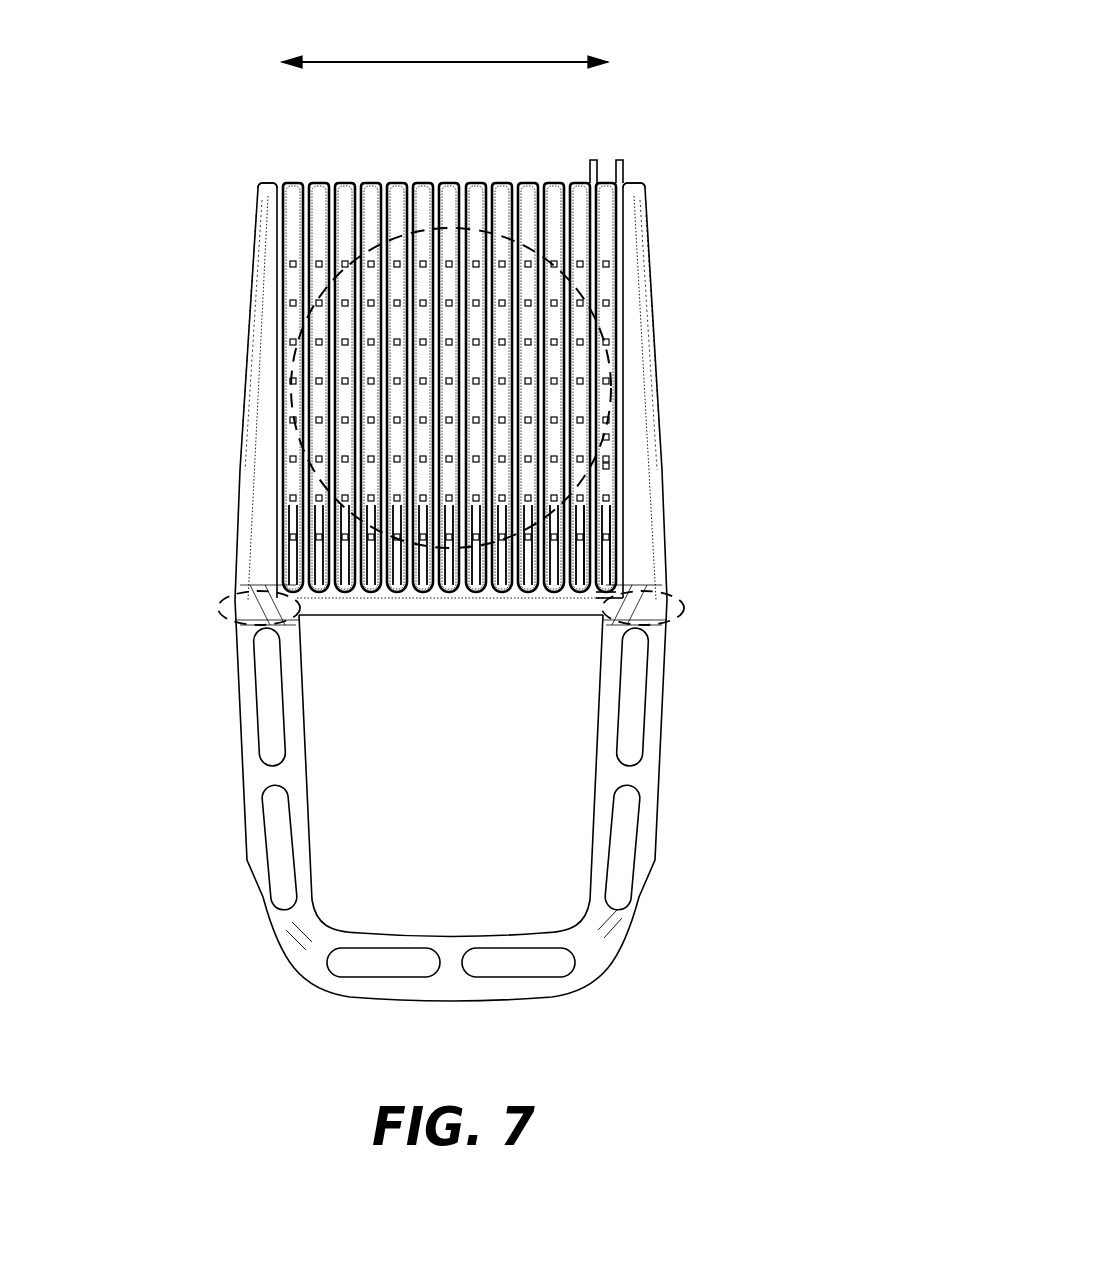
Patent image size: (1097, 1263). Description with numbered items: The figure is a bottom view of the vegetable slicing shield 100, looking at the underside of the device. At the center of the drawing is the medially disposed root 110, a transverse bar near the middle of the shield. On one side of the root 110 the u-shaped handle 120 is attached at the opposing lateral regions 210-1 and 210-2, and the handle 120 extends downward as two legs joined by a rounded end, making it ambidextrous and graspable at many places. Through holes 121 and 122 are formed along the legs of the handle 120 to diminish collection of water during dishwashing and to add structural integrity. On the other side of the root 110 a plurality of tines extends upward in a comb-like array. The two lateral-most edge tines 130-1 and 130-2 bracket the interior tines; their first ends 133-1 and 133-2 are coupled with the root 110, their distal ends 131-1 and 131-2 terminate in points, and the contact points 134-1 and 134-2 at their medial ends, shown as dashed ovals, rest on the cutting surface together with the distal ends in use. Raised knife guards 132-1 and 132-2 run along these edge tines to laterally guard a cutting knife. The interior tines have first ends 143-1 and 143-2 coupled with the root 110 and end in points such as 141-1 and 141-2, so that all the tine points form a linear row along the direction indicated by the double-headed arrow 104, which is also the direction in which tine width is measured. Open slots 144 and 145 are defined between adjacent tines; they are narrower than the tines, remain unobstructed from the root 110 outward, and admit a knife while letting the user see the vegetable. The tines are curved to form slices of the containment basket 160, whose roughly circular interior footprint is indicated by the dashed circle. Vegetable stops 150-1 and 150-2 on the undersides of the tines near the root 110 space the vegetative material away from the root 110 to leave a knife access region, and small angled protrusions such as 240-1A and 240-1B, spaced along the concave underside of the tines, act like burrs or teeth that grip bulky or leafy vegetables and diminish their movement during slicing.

The vegetable slicing shield 100 is at (790, 32).
The line of the row of spaced apart points 104 is at (396, 62).
The root 110 is at (450, 615).
The u-shaped handle 120 is at (297, 985).
The through hole 121 is at (257, 700).
The through hole 122 is at (265, 822).
The edge tine 130-1 is at (637, 205).
The edge tine 130-2 is at (266, 203).
The distal end of edge tine 131-1 is at (635, 190).
The distal end of edge tine 131-2 is at (268, 190).
The raised knife guard 132-1 is at (642, 235).
The raised knife guard 132-2 is at (259, 236).
The first end of edge tine 133-1 is at (650, 610).
The first end of edge tine 133-2 is at (268, 608).
The contact point 134-1 is at (684, 608).
The contact point 134-2 is at (218, 608).
The point of interior tine 141-1 is at (603, 183).
The point of interior tine 141-2 is at (585, 183).
The first end of interior tine 143-1 is at (612, 600).
The first end of interior tine 143-2 is at (617, 592).
The open slot 144 is at (620, 183).
The open slot 145 is at (592, 182).
The vegetable stop 150-1 is at (612, 508).
The vegetable stop 150-2 is at (585, 543).
The containment basket 160 is at (399, 233).
The lateral region of root 210-1 is at (657, 578).
The lateral region of root 210-2 is at (245, 578).
The angled protrusion 240-1A is at (608, 466).
The angled protrusion 240-1B is at (605, 437).